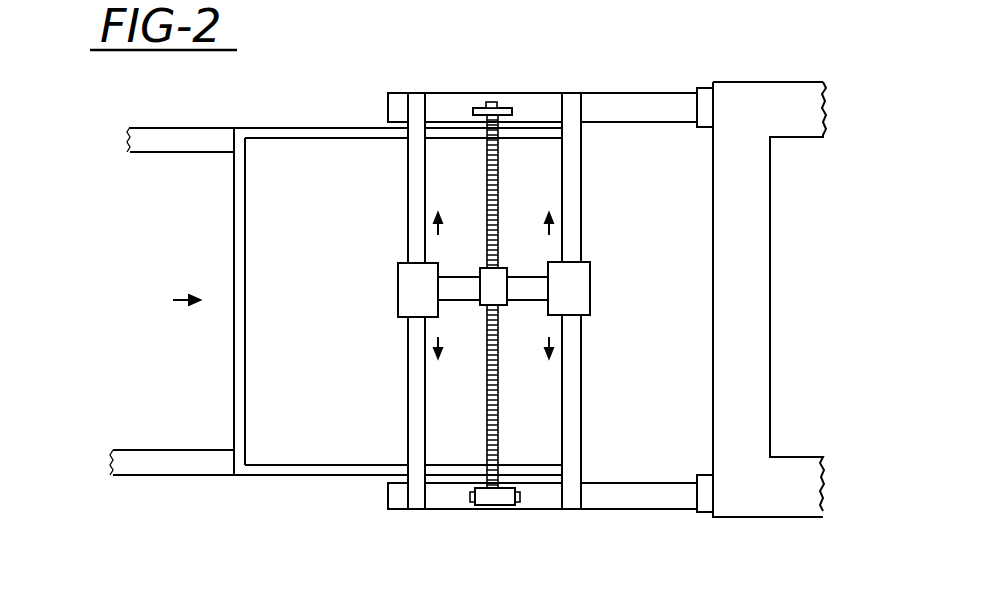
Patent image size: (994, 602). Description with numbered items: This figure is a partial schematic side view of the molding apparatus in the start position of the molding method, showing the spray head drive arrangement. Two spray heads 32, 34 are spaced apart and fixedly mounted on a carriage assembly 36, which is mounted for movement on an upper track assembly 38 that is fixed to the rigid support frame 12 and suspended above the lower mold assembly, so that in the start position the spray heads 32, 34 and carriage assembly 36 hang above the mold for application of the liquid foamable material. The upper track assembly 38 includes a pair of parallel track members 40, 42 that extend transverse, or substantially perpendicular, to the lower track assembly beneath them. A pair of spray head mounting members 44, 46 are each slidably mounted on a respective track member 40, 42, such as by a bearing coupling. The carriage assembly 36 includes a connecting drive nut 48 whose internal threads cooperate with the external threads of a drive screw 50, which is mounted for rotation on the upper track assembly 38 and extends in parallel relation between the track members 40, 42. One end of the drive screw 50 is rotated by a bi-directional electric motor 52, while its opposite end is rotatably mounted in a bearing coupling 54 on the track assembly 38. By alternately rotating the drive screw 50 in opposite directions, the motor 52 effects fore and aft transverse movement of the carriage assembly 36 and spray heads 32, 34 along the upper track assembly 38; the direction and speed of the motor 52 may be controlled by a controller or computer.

The support frame 12 is at (737, 87).
The spray head 32 is at (386, 293).
The spray head 34 is at (602, 297).
The carriage assembly 36 is at (460, 258).
The upper track assembly 38 is at (594, 403).
The track member 40 is at (410, 423).
The track member 42 is at (581, 223).
The spray head mounting member 44 is at (398, 272).
The spray head mounting member 46 is at (590, 262).
The connecting drive nut 48 is at (497, 300).
The drive screw 50 is at (500, 198).
The bi-directional electric motor 52 is at (503, 500).
The bearing coupling 54 is at (508, 105).